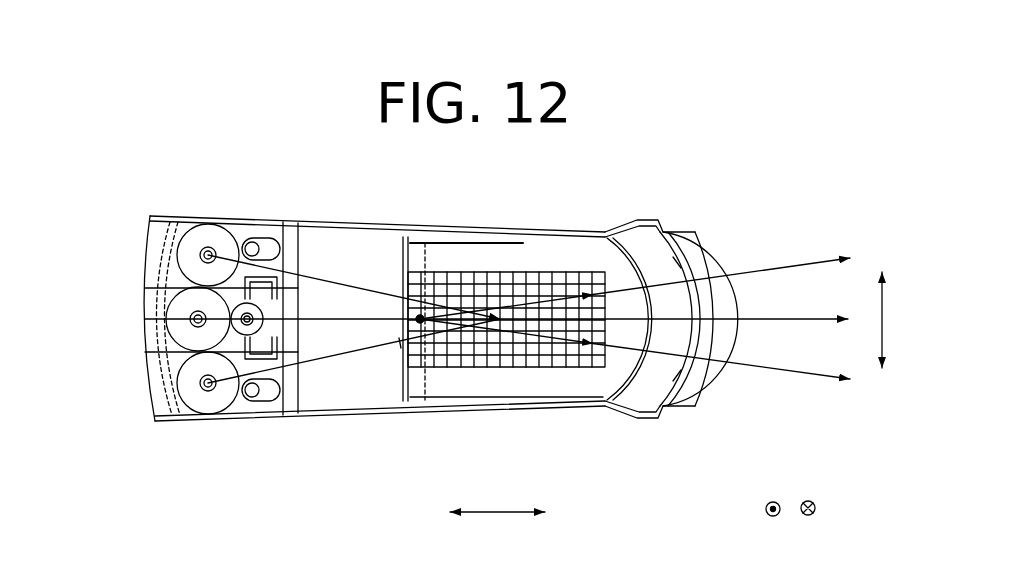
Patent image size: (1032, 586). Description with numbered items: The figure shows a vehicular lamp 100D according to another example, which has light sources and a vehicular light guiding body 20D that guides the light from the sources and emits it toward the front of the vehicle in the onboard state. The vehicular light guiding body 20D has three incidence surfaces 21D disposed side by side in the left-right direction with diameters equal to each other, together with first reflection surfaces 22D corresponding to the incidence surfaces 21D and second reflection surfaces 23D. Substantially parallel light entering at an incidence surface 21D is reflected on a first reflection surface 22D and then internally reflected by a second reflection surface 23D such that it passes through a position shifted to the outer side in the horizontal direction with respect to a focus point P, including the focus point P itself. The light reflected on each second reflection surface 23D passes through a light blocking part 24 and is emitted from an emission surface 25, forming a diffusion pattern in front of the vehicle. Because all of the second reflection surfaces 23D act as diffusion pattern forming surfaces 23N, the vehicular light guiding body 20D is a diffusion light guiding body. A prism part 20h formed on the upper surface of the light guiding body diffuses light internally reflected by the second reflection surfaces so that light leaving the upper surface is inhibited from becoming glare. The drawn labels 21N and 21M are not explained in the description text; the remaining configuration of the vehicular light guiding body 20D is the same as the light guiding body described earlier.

The vehicular lamp 100D is at (712, 190).
The vehicular light guiding body 20D is at (326, 421).
The prism part 20h is at (495, 370).
The light source (side) 21N is at (208, 250).
The light source (center) 21M is at (185, 340).
The incidence surfaces 21D is at (132, 321).
The first reflection surfaces 22D is at (253, 238).
The diffusion pattern forming surfaces 23N is at (162, 393).
The second reflection surfaces 23D is at (121, 321).
The light blocking part 24 is at (432, 243).
The emission surface 25 is at (733, 290).
The focus point P is at (400, 343).